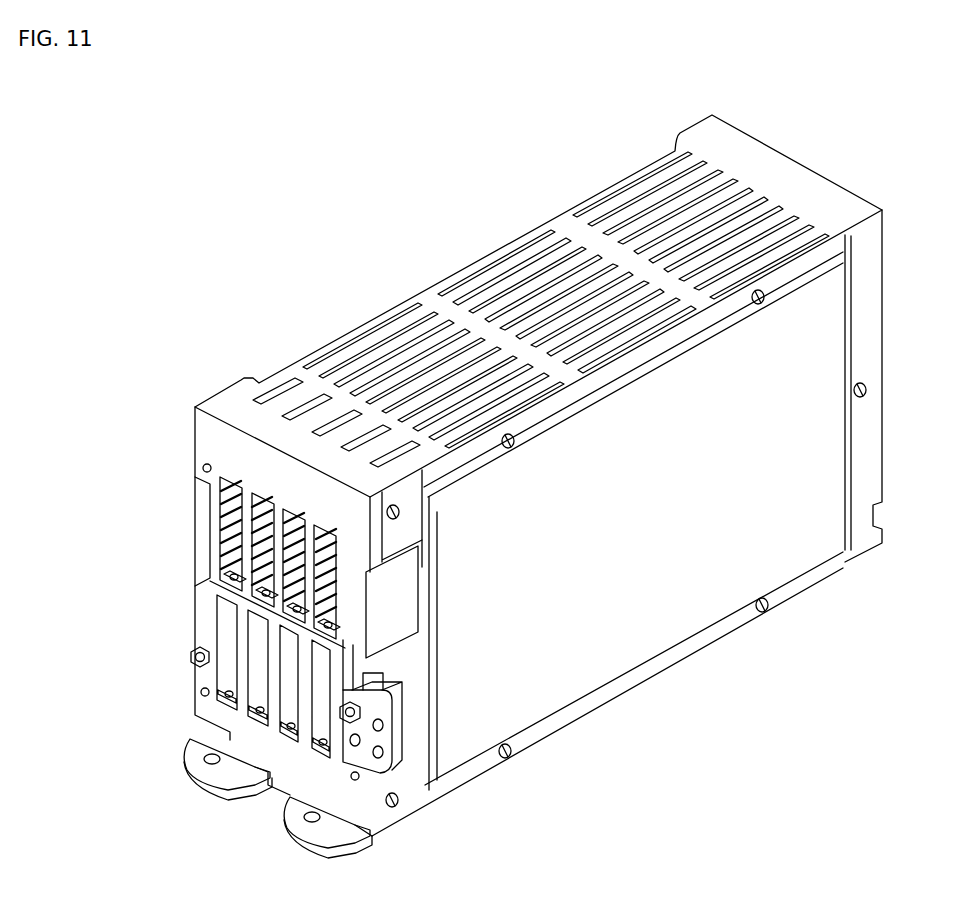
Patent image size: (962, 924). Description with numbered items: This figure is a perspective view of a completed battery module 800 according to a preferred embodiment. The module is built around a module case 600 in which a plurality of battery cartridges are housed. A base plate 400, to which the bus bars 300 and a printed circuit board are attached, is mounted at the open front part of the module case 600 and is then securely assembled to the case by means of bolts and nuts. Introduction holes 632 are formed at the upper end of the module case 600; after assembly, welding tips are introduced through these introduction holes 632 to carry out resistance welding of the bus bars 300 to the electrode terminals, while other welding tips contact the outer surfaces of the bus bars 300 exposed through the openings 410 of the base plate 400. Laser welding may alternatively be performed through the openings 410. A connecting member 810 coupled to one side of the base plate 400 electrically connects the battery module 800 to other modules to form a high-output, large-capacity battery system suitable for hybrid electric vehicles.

The battery module 800 is at (57, 170).
The module case 600 is at (475, 265).
The introduction holes 632 is at (305, 402).
The bus bars 300 is at (225, 513).
The openings 410 is at (236, 668).
The base plate 400 is at (225, 727).
The connecting member 810 is at (398, 747).